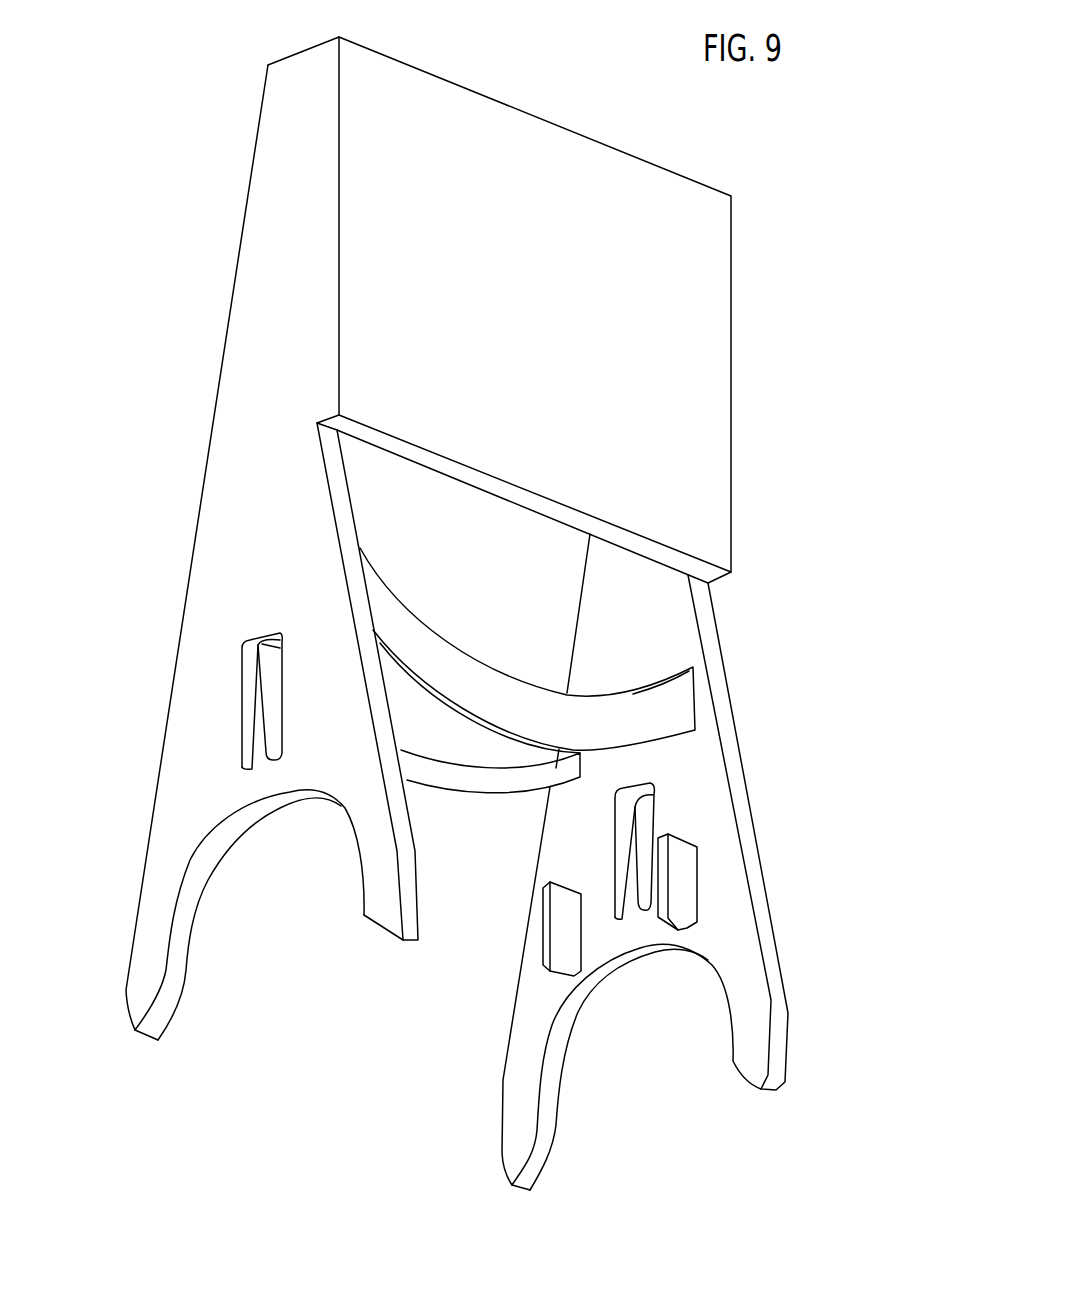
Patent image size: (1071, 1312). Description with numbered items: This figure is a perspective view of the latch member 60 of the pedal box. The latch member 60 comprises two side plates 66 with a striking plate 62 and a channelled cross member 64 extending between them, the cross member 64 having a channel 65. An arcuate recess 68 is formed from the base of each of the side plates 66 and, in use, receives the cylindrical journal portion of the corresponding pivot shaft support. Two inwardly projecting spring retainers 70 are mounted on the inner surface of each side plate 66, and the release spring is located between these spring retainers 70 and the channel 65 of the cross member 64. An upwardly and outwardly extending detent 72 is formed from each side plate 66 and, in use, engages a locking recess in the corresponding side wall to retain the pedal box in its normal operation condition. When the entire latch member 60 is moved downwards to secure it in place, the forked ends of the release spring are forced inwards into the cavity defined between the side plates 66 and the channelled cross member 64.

The latch member 60 is at (236, 215).
The striking plate 62 is at (633, 267).
The channelled cross member 64 is at (678, 697).
The channel 65 is at (490, 753).
The side plates 66 is at (277, 425).
The arcuate recess 68 is at (186, 897).
The spring retainers 70 is at (569, 940).
The detent 72 is at (245, 667).